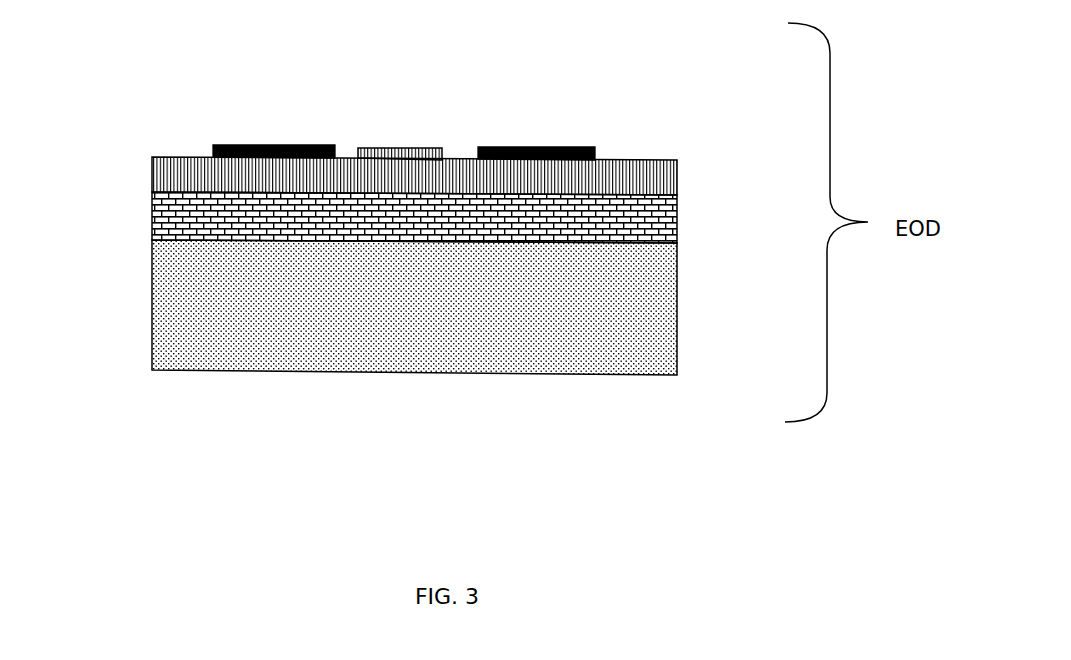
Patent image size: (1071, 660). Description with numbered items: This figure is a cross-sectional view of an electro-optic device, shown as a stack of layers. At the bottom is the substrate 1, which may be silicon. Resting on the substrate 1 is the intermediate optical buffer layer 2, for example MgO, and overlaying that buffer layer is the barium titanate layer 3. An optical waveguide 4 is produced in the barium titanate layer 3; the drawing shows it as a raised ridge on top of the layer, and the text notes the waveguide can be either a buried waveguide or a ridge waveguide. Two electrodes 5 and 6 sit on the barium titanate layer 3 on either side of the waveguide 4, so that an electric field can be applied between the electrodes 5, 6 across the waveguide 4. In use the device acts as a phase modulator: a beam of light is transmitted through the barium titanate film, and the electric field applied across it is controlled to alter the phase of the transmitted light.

The substrate 1 is at (688, 341).
The intermediate optical buffer layer 2 is at (690, 210).
The barium titanate layer 3 is at (142, 167).
The optical waveguide 4 is at (405, 136).
The electrode 5 is at (310, 135).
The electrode 6 is at (535, 137).